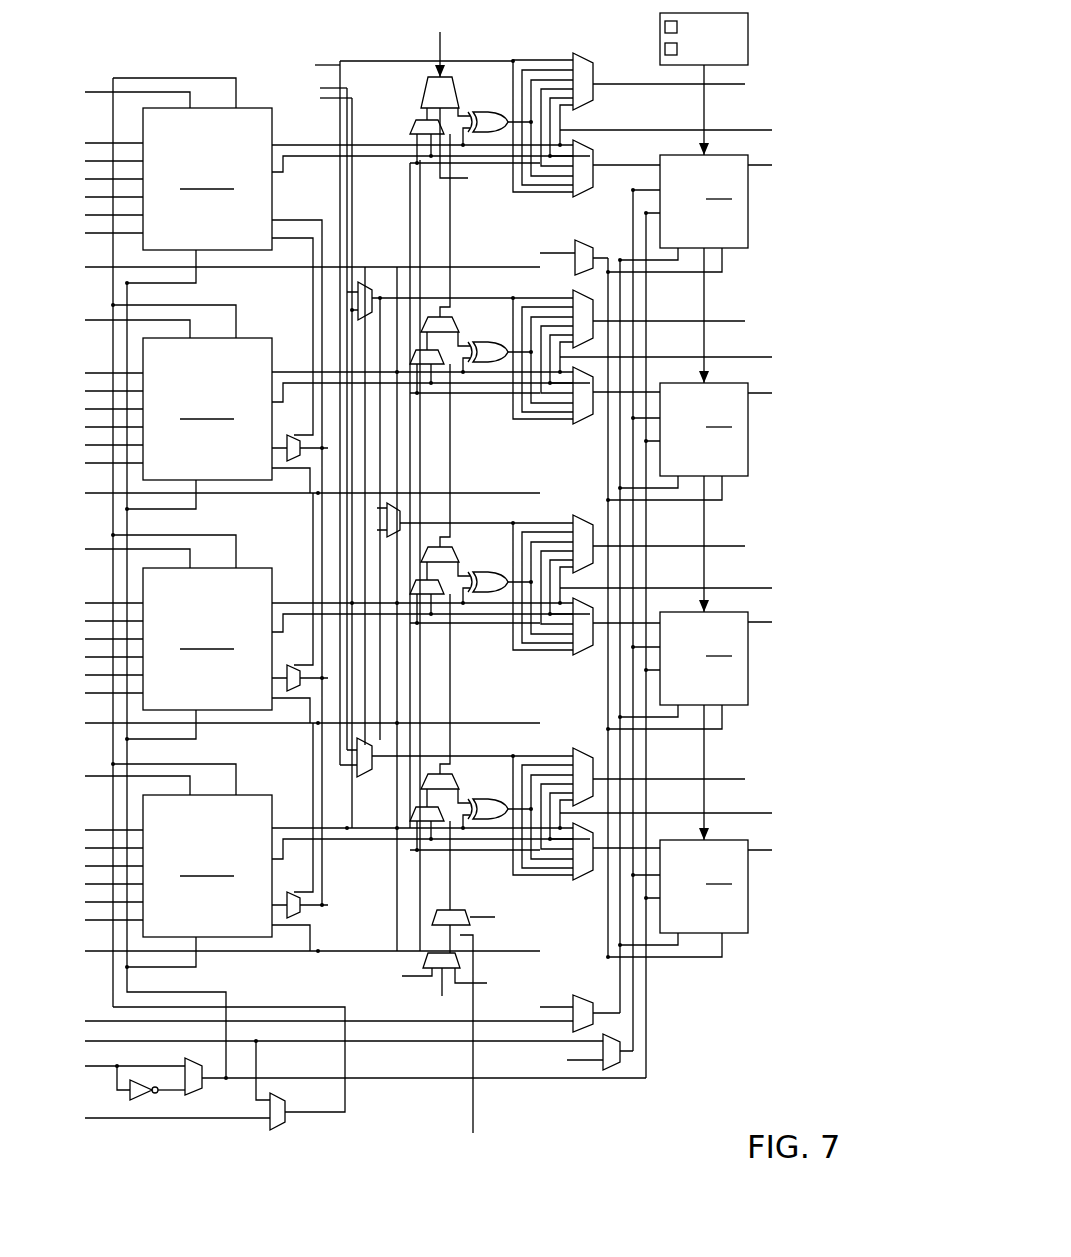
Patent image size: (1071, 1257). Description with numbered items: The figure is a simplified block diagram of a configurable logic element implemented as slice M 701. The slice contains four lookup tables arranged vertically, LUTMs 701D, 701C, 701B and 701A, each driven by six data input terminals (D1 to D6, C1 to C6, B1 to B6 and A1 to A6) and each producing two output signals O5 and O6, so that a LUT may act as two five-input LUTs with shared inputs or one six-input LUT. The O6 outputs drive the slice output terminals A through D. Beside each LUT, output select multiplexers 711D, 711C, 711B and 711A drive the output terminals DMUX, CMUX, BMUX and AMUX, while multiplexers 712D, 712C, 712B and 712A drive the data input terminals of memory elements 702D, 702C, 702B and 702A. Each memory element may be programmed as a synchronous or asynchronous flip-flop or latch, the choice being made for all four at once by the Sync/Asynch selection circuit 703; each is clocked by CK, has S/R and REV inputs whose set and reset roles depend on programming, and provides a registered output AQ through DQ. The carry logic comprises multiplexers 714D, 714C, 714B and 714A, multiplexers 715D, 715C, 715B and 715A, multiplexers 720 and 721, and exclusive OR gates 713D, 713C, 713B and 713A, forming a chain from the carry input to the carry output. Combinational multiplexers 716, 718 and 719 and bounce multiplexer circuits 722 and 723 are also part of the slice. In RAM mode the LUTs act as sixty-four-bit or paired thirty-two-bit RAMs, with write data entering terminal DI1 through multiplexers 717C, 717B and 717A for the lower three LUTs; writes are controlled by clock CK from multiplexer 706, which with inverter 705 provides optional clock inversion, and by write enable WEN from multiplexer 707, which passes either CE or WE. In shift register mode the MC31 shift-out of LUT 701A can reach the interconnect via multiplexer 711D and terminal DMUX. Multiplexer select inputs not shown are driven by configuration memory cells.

The slice M 701 is at (180, 58).
The lookup table (LUTM) 701D is at (233, 214).
The lookup table (LUTM) 701C is at (233, 444).
The lookup table (LUTM) 701B is at (233, 674).
The lookup table (LUTM) 701A is at (233, 901).
The memory element 702D is at (745, 222).
The memory element 702C is at (745, 450).
The memory element 702B is at (745, 679).
The memory element 702A is at (745, 907).
The Sync/Asynch selection circuit 703 is at (660, 50).
The inverter 705 is at (138, 1102).
The multiplexer 706 is at (203, 1097).
The multiplexer 707 is at (277, 1130).
The output select multiplexer 711D is at (594, 98).
The output select multiplexer 711C is at (572, 297).
The output select multiplexer 711B is at (572, 516).
The output select multiplexer 711A is at (573, 750).
The multiplexer 712D is at (592, 162).
The multiplexer 712C is at (573, 424).
The multiplexer 712B is at (568, 655).
The multiplexer 712A is at (574, 880).
The exclusive OR gate 713D is at (478, 112).
The exclusive OR gate 713C is at (478, 341).
The exclusive OR gate 713B is at (478, 571).
The exclusive OR gate 713A is at (478, 797).
The carry multiplexer 714D is at (446, 75).
The carry multiplexer 714C is at (447, 294).
The carry multiplexer 714B is at (424, 546).
The carry multiplexer 714A is at (424, 773).
The carry multiplexer 715D is at (412, 136).
The carry multiplexer 715C is at (443, 370).
The carry multiplexer 715B is at (443, 600).
The carry multiplexer 715A is at (438, 825).
The combinational multiplexer 716 is at (366, 280).
The multiplexer 717C is at (292, 463).
The multiplexer 717B is at (292, 693).
The multiplexer 717A is at (292, 920).
The combinational multiplexer 718 is at (385, 517).
The combinational multiplexer 719 is at (366, 777).
The carry multiplexer 720 is at (473, 963).
The carry multiplexer 721 is at (576, 240).
The bounce multiplexer circuit 722 is at (578, 994).
The bounce multiplexer circuit 723 is at (612, 1072).